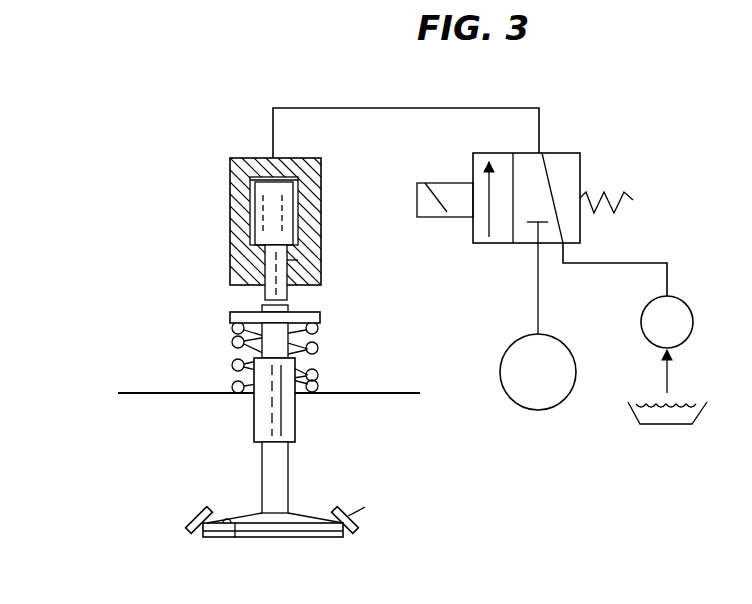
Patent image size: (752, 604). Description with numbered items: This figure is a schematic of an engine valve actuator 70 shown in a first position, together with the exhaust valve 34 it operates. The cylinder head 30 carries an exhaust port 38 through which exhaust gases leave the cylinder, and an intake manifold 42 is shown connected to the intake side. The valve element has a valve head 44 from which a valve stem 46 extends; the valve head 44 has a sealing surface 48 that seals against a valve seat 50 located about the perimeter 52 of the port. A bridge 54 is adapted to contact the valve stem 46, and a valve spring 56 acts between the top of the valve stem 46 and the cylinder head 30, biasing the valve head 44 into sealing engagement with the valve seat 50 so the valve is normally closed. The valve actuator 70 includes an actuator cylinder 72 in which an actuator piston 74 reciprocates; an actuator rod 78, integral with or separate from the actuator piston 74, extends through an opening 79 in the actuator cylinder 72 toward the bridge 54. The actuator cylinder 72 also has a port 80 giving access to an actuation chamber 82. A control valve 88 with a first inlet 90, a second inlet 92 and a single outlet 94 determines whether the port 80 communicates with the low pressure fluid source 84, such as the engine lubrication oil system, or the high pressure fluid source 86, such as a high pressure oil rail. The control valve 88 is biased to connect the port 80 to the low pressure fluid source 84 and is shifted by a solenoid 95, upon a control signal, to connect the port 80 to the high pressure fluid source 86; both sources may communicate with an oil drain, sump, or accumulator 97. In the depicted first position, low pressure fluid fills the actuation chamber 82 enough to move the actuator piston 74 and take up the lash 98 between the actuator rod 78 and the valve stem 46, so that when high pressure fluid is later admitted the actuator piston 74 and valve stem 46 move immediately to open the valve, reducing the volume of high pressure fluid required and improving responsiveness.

The cylinder head 30 is at (145, 392).
The exhaust valve 34 is at (220, 478).
The exhaust port 38 is at (201, 533).
The intake manifold 42 is at (308, 420).
The valve head 44 is at (285, 538).
The valve stem 46 is at (277, 462).
The sealing surface 48 is at (234, 530).
The valve seat 50 is at (345, 533).
The perimeter 52 is at (375, 506).
The bridge 54 is at (305, 318).
The valve spring 56 is at (318, 372).
The valve actuator 70 is at (246, 136).
The actuator cylinder 72 is at (245, 195).
The actuator piston 74 is at (268, 220).
The actuator rod 78 is at (285, 261).
The opening 79 is at (270, 276).
The port 80 is at (274, 157).
The actuation chamber 82 is at (294, 178).
The low pressure fluid source 84 is at (690, 318).
The high pressure fluid source 86 is at (538, 372).
The control valve 88 is at (581, 160).
The first inlet 90 is at (537, 246).
The second inlet 92 is at (565, 245).
The outlet 94 is at (542, 153).
The solenoid 95 is at (420, 214).
The oil drain, sump, or accumulator 97 is at (660, 425).
The lash 98 is at (256, 299).